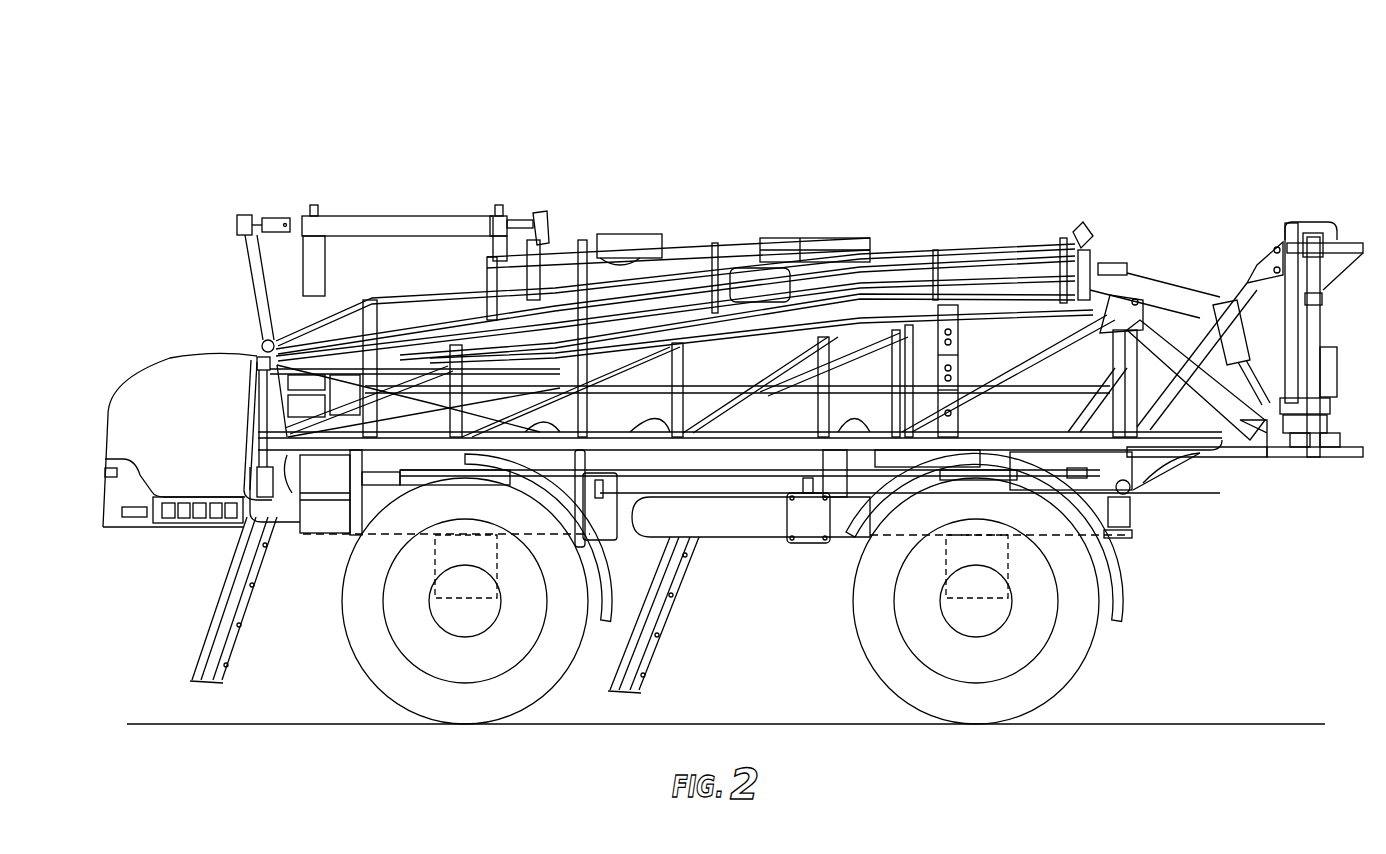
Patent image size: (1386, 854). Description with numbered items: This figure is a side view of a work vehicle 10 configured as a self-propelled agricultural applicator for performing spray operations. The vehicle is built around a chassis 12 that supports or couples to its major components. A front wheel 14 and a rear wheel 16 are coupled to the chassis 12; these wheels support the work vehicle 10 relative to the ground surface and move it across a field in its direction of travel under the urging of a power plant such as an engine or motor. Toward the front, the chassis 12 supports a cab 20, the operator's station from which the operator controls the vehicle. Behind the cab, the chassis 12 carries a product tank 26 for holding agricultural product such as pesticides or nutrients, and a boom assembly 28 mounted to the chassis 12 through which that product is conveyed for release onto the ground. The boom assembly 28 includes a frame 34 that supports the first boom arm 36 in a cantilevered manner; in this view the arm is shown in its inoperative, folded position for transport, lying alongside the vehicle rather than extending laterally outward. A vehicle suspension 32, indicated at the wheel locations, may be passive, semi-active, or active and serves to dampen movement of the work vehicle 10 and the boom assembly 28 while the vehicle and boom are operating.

The work vehicle 10 is at (1172, 130).
The chassis 12 is at (733, 520).
The front wheel 14 is at (378, 667).
The rear wheel 16 is at (1073, 660).
The cab 20 is at (388, 215).
The product tank 26 is at (615, 275).
The boom assembly 28 is at (958, 200).
The vehicle suspension 32 is at (435, 573).
The frame 34 is at (1318, 210).
The first boom arm 36 is at (912, 263).